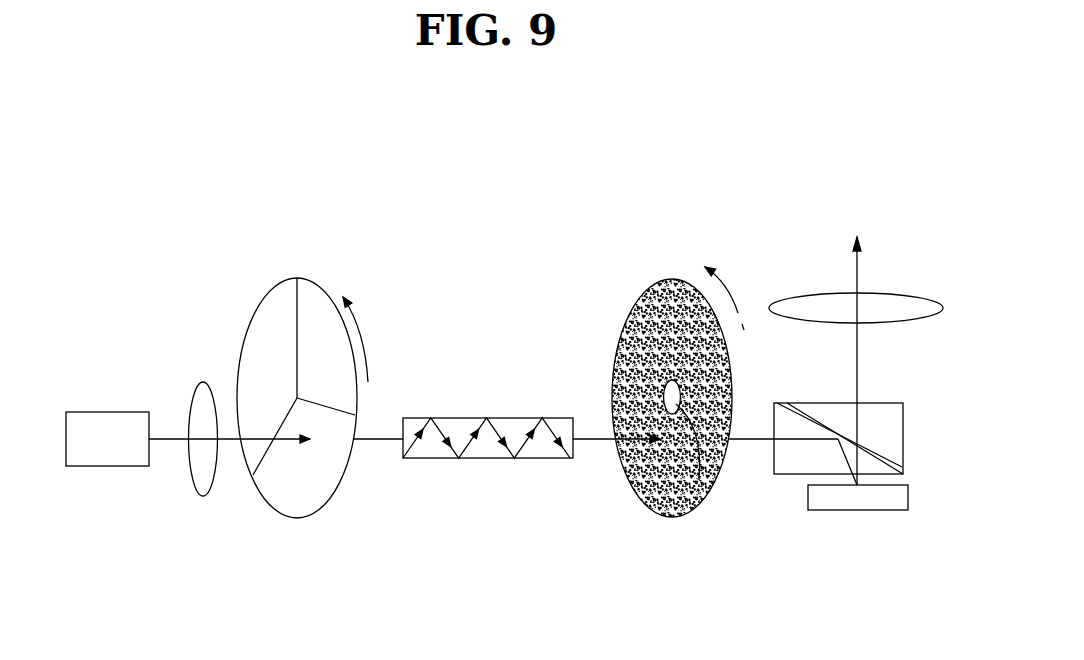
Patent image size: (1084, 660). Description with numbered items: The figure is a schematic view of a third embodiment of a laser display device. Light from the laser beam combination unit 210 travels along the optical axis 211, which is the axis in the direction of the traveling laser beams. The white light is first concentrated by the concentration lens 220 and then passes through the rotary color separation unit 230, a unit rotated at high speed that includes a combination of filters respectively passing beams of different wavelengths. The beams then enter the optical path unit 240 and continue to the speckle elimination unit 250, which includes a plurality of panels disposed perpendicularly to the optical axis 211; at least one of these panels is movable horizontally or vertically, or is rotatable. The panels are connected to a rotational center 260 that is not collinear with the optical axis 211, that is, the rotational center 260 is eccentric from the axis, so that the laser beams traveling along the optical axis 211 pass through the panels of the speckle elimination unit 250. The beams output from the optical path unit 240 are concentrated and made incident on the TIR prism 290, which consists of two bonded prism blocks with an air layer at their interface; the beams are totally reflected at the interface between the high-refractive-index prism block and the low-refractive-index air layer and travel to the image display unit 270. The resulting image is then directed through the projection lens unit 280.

The laser beam combination unit 210 is at (103, 413).
The concentration lens 220 is at (197, 490).
The rotary color separation unit 230 is at (290, 277).
The optical axis 211 is at (375, 440).
The optical path unit 240 is at (462, 417).
The speckle elimination unit 250 is at (663, 278).
The rotational center 260 is at (699, 480).
The image display unit 270 is at (855, 510).
The projection lens unit 280 is at (892, 297).
The TIR prism 290 is at (877, 412).